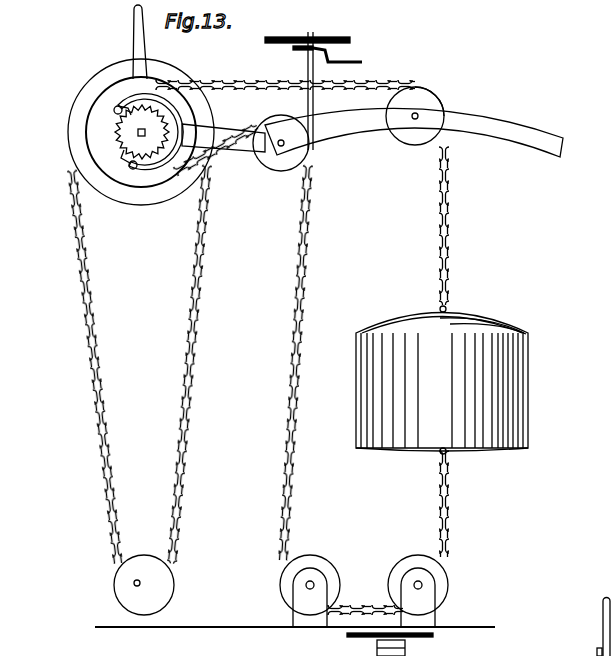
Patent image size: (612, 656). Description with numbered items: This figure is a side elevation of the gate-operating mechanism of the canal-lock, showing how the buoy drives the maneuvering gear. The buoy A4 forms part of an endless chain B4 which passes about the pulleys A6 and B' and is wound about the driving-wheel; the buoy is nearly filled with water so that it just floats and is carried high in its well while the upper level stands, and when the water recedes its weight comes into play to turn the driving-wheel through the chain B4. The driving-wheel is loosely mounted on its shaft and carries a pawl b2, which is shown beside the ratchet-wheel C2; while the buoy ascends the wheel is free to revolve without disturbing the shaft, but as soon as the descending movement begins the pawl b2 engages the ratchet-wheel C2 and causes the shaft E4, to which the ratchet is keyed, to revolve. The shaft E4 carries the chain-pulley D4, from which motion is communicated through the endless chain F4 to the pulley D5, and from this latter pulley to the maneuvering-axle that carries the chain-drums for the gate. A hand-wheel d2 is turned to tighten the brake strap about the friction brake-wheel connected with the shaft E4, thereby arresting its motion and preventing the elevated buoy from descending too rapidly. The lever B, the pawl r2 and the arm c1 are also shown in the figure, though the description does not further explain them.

The lever B is at (127, 42).
The chain-pulley D4 is at (126, 132).
The ratchet-wheel C2 is at (150, 132).
The shaft E4 is at (142, 132).
The pawl b2 is at (117, 104).
The pawl r2 is at (117, 159).
The arm c1 is at (219, 149).
The pulley B' is at (408, 127).
The hand-wheel d2 is at (349, 335).
The endless chain B4 is at (313, 347).
The endless chain F4 is at (131, 364).
The buoy A4 is at (528, 370).
The pulley D5 is at (144, 585).
The pulley A6 is at (460, 582).